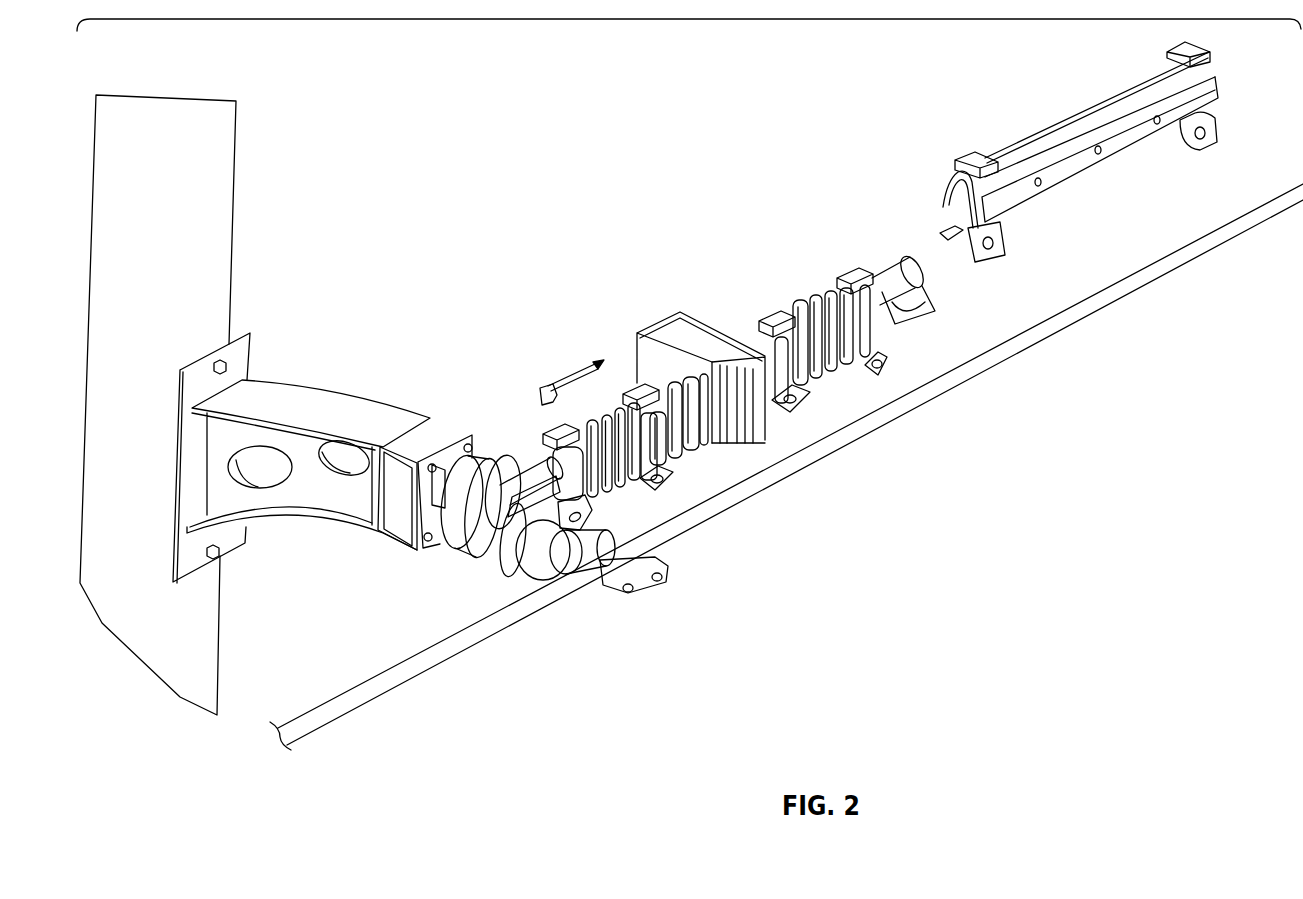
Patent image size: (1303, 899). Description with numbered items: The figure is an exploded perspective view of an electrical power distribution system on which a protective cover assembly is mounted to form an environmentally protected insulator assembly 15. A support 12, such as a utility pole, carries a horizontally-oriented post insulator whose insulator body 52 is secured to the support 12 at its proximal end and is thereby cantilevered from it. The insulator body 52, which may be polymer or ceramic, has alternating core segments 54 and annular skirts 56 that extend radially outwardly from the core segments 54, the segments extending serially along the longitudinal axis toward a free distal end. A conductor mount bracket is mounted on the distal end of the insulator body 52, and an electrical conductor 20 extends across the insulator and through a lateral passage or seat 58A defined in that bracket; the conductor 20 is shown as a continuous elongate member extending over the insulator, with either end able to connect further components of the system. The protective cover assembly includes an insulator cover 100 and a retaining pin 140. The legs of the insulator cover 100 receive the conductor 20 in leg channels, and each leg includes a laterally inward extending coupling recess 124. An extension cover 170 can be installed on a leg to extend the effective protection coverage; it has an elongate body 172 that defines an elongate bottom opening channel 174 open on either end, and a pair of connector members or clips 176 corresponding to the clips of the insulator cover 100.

The support 12 is at (218, 187).
The environmentally protected insulator assembly 15 is at (893, 496).
The electrical conductor 20 is at (1045, 330).
The insulator body 52 is at (484, 562).
The core segments 54 is at (480, 477).
The annular skirts 56 is at (517, 560).
The lateral passage or seat 58A is at (612, 582).
The insulator cover 100 is at (709, 323).
The coupling recess 124 is at (902, 308).
The retaining pin 140 is at (566, 384).
The extension cover 170 is at (1078, 151).
The elongate body 172 is at (1122, 103).
The bottom opening channel 174 is at (1097, 171).
The connector members or clips 176 is at (952, 222).